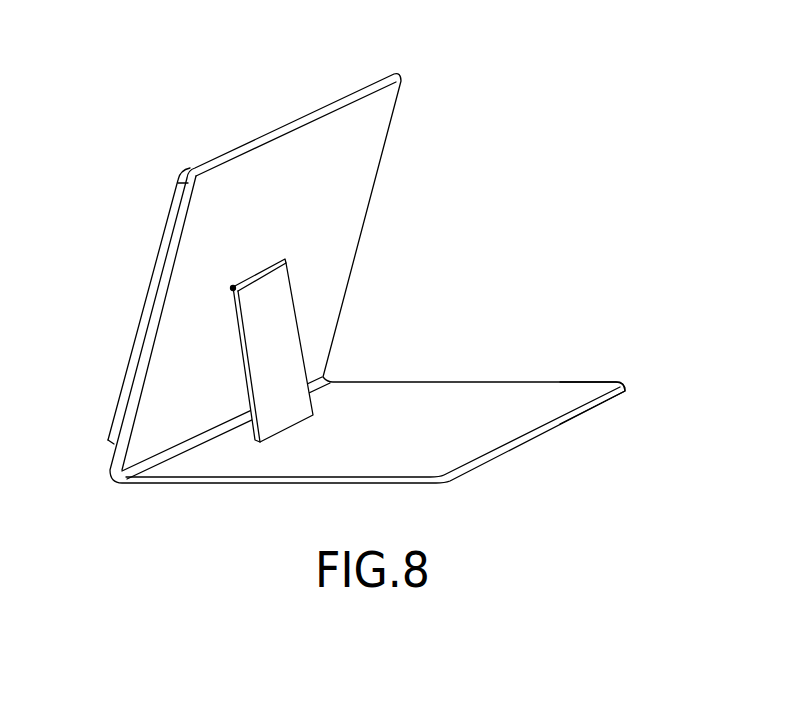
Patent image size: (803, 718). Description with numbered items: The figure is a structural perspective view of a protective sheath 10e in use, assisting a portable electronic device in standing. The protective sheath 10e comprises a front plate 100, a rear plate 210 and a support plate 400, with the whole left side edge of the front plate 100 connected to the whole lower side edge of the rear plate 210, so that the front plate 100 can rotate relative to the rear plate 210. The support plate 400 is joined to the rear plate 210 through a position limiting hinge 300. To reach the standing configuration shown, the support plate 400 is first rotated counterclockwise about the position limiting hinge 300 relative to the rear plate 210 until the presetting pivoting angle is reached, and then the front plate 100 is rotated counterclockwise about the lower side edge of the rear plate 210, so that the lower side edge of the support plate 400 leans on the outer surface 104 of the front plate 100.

The protective sheath 10e is at (389, 301).
The front plate 100 is at (157, 485).
The outer surface 104 is at (601, 393).
The rear plate 210 is at (350, 179).
The position limiting hinge 300 is at (233, 288).
The support plate 400 is at (277, 343).